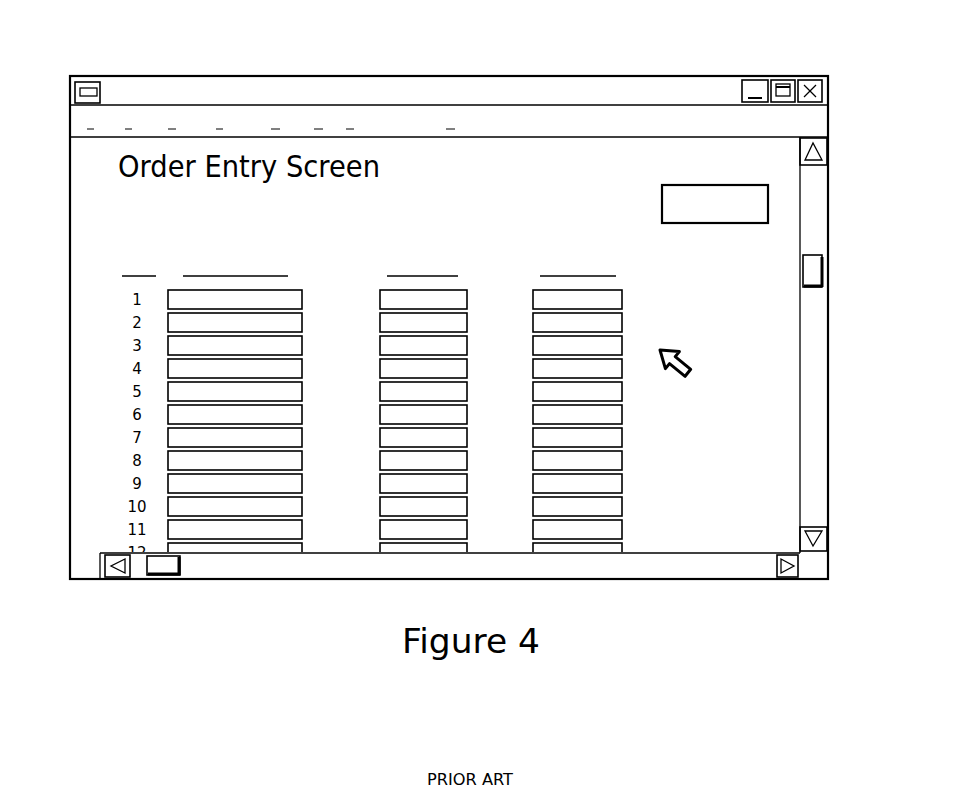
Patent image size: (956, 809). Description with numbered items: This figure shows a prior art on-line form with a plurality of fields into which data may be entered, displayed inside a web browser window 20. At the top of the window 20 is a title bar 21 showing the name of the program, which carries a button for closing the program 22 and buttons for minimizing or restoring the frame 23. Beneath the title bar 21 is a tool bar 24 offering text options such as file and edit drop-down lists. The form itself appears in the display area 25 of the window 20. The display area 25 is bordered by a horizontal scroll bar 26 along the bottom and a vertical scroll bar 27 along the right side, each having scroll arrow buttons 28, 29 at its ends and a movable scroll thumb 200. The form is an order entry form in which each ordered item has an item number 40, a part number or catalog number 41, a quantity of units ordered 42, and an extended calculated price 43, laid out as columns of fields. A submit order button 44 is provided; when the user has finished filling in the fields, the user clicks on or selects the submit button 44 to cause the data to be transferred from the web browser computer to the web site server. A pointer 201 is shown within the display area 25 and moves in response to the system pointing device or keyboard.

The web browser frame 20 is at (70, 243).
The title bar 21 is at (215, 88).
The closing program button 22 is at (90, 82).
The minimizing or restoring frame button 23 is at (809, 110).
The tool bar 24 is at (345, 116).
The display area 25 is at (100, 336).
The horizontal scroll bar 26 is at (292, 580).
The vertical scroll bar 27 is at (828, 372).
The scroll arrow buttons (left/down) 28 is at (828, 540).
The scroll arrow buttons (up/right) 29 is at (828, 150).
The item number 40 is at (156, 268).
The part number 41 is at (292, 270).
The quantity of units ordered 42 is at (428, 258).
The extended calculated price 43 is at (568, 258).
The submit order button 44 is at (720, 185).
The scroll bar thumb 200 is at (822, 277).
The pointer 201 is at (688, 358).